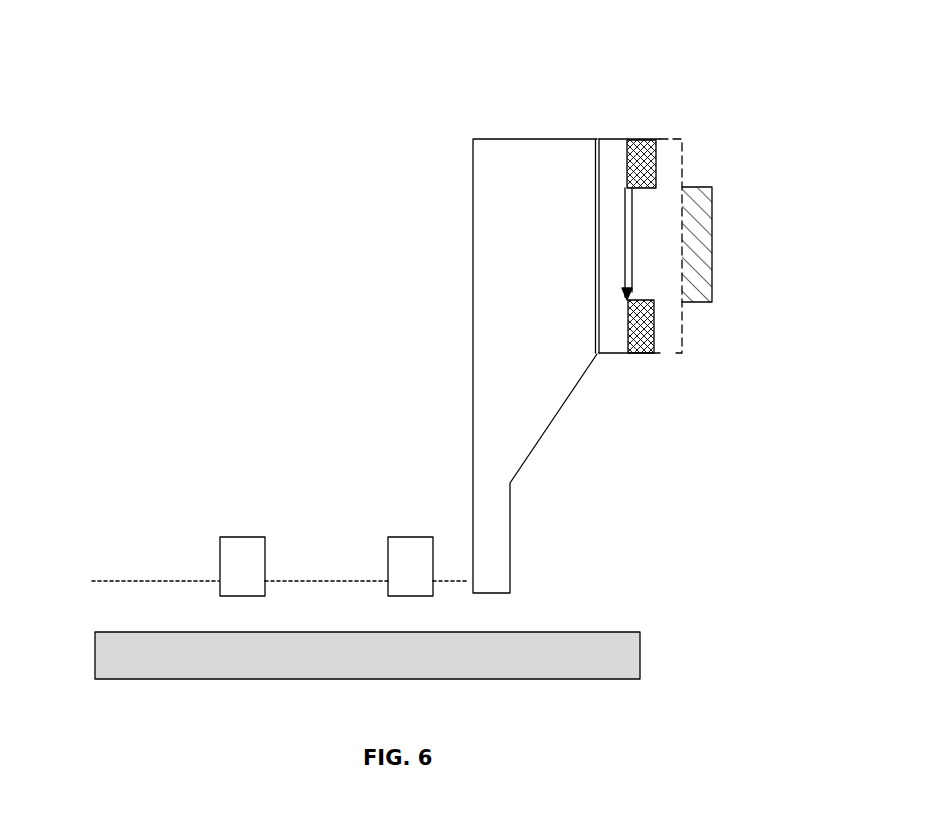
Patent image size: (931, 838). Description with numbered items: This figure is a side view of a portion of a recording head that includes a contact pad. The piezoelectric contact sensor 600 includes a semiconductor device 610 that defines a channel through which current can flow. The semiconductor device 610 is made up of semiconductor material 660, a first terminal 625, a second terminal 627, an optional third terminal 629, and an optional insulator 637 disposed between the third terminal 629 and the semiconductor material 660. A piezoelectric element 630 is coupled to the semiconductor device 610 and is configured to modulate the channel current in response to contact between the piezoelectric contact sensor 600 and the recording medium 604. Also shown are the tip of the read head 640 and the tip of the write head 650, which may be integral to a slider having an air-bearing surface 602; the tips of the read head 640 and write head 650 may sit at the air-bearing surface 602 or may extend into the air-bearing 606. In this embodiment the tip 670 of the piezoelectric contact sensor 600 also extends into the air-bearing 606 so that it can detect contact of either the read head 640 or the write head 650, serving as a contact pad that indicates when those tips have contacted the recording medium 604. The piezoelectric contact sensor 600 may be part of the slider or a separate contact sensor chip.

The piezoelectric contact sensor 600 is at (457, 73).
The air-bearing surface 602 is at (138, 580).
The recording medium 604 is at (610, 653).
The air-bearing 606 is at (142, 610).
The semiconductor device 610 is at (632, 100).
The first terminal 625 is at (638, 138).
The second terminal 627 is at (642, 317).
The third terminal 629 is at (700, 230).
The piezoelectric element 630 is at (537, 267).
The insulator 637 is at (645, 265).
The read head 640 is at (248, 558).
The write head 650 is at (412, 558).
The semiconductor material 660 is at (613, 190).
The tip of piezoelectric contact sensor 670 is at (510, 593).